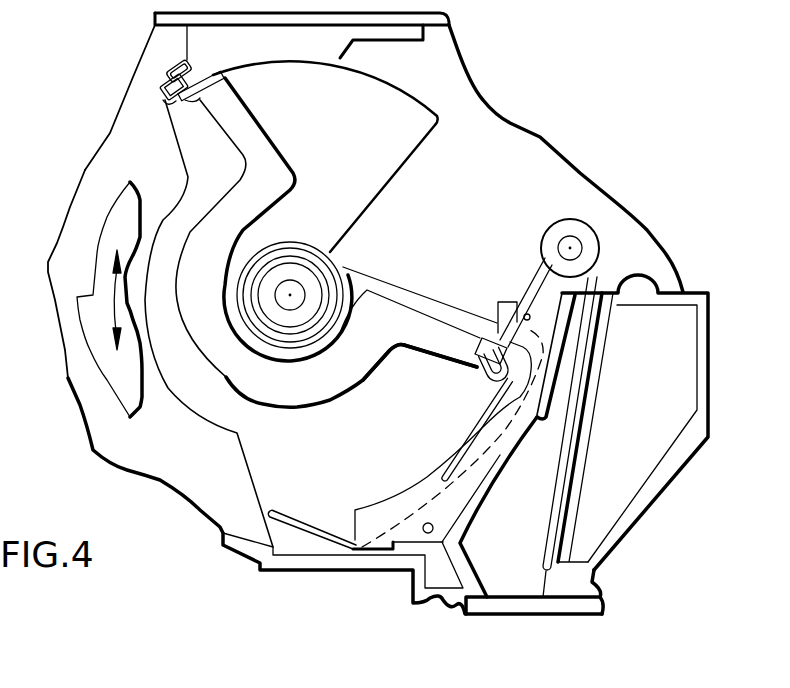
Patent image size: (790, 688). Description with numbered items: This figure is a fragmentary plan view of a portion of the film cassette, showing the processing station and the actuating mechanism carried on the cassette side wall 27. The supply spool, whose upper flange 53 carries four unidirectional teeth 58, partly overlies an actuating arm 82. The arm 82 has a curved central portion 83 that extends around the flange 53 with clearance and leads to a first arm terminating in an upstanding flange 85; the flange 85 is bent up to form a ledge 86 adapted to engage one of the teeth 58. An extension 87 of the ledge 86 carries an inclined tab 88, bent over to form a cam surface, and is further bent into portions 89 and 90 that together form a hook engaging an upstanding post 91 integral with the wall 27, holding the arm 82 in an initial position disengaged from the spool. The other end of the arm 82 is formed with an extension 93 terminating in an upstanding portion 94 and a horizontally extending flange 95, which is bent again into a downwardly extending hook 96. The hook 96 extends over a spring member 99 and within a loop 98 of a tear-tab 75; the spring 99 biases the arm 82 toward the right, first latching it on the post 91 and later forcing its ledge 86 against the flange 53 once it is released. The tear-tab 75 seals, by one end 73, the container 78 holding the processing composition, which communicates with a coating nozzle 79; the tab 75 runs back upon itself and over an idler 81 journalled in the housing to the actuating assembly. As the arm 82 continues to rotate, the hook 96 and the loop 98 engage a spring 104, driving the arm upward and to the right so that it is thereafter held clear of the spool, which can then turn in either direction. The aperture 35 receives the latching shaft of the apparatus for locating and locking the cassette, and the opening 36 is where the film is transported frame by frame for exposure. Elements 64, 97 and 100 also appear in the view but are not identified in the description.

The side wall 27 is at (482, 100).
The aperture 35 is at (278, 240).
The opening 36 is at (310, 264).
The upper flange 53 is at (100, 363).
The unidirectional teeth 58 is at (77, 297).
The wall 64 is at (650, 518).
The end of tear-tab 73 is at (575, 431).
The tear-tab 75 is at (530, 276).
The container 78 is at (479, 574).
The coating nozzle 79 is at (527, 610).
The idler 81 is at (547, 220).
The actuating arm 82 is at (357, 397).
The curved central portion 83 is at (285, 403).
The upstanding flange 85 is at (195, 100).
The ledge 86 is at (165, 108).
The extension 87 is at (160, 82).
The inclined tab 88 is at (160, 94).
The hook portion 89 is at (170, 65).
The hook portion 90 is at (190, 65).
The upstanding post 91 is at (207, 85).
The extension 93 is at (410, 317).
The upstanding portion 94 is at (483, 326).
The horizontally-extending flange 95 is at (474, 356).
The hook 96 is at (495, 388).
The hook 97 is at (483, 385).
The loop 98 is at (528, 432).
The spring member 99 is at (448, 455).
The guide 100 is at (497, 302).
The spring 104 is at (292, 512).